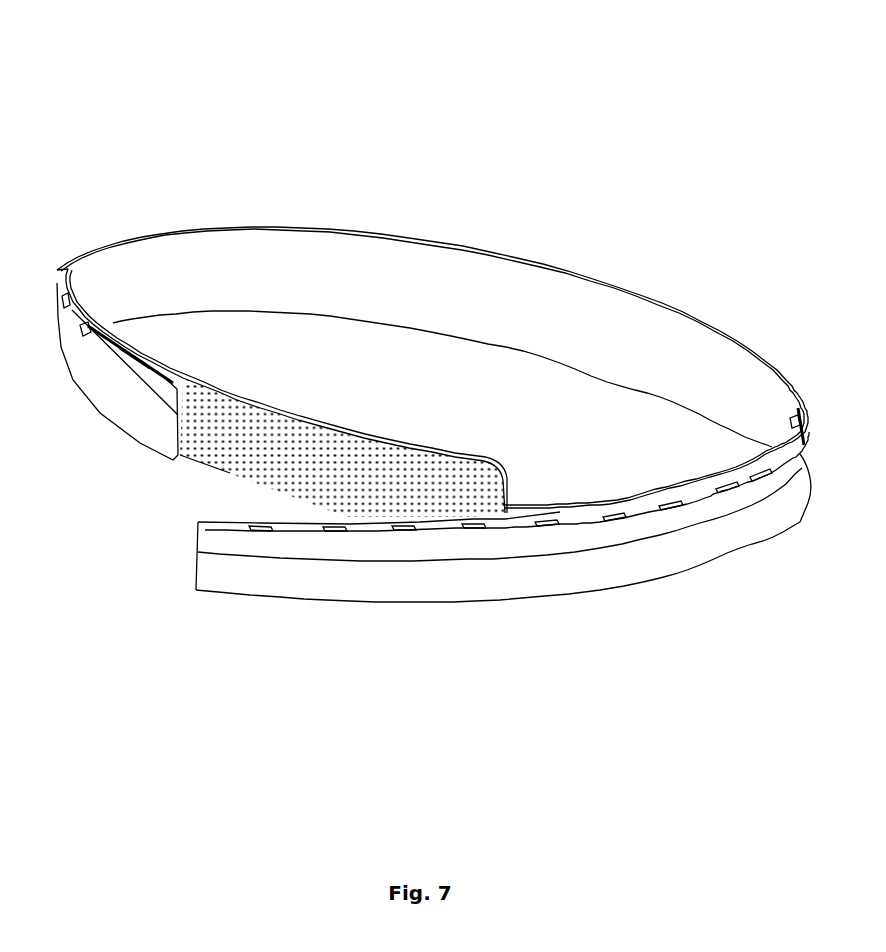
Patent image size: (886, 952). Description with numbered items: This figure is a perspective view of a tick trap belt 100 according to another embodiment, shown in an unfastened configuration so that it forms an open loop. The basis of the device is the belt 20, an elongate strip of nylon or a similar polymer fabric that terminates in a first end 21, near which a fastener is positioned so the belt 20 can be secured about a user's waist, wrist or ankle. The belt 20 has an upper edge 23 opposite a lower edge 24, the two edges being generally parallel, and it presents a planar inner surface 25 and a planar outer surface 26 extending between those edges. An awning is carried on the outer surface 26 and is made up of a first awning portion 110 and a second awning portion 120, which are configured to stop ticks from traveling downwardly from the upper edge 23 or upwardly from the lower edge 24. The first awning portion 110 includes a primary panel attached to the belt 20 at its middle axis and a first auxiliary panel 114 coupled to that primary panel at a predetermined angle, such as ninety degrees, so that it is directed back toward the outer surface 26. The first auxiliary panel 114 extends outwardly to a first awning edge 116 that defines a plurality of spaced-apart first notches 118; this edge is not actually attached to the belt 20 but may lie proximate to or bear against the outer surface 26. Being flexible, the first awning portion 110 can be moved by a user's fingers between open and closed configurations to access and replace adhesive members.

The tick trap belt 100 is at (434, 338).
The belt 20 is at (432, 303).
The first end 21 is at (507, 487).
The upper edge 23 is at (350, 433).
The lower edge 24 is at (202, 467).
The inner surface 25 is at (583, 313).
The outer surface 26 is at (95, 308).
The first awning portion 110 is at (142, 386).
The first auxiliary panel 114 is at (798, 413).
The first awning edge 116 is at (133, 357).
The first notches 118 is at (717, 492).
The second awning portion 120 is at (87, 377).